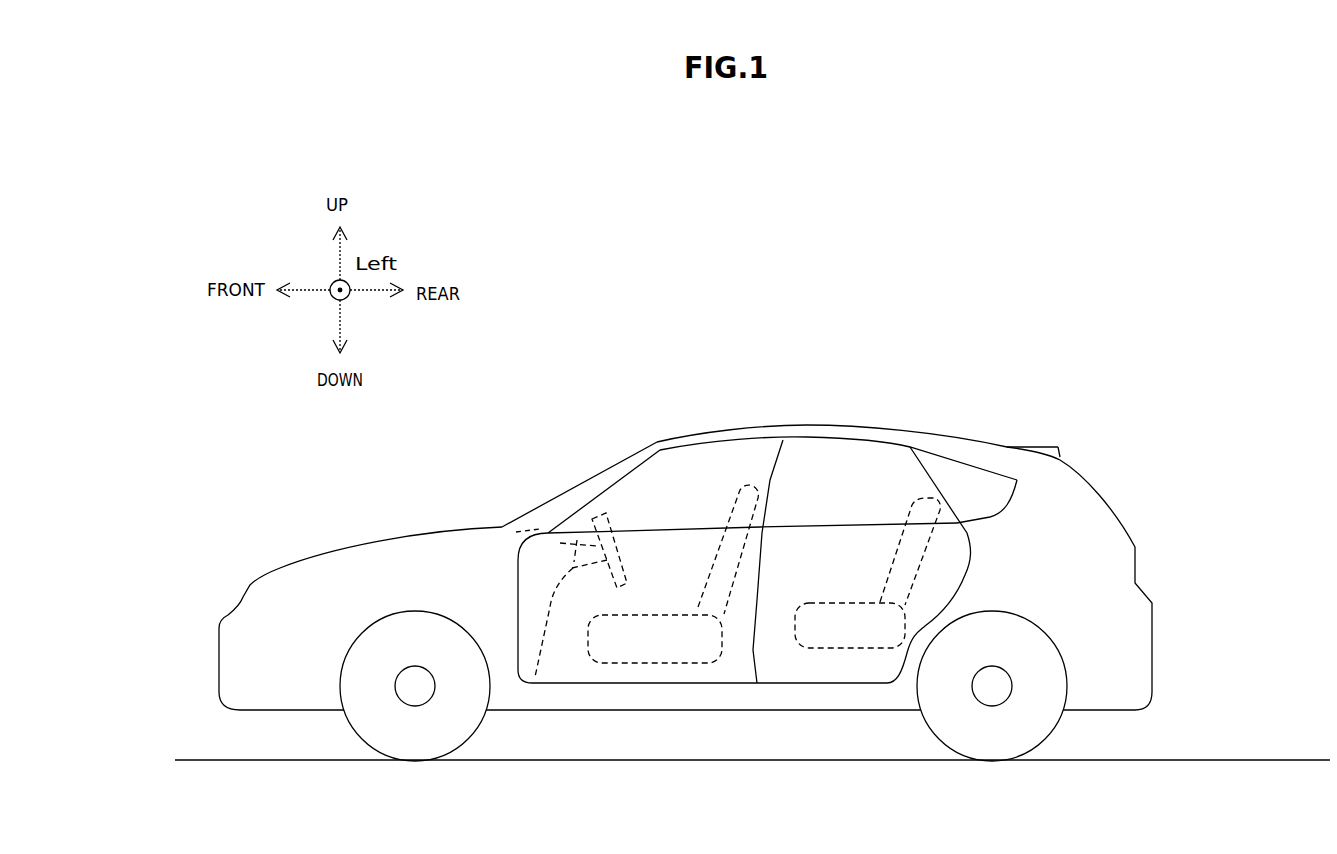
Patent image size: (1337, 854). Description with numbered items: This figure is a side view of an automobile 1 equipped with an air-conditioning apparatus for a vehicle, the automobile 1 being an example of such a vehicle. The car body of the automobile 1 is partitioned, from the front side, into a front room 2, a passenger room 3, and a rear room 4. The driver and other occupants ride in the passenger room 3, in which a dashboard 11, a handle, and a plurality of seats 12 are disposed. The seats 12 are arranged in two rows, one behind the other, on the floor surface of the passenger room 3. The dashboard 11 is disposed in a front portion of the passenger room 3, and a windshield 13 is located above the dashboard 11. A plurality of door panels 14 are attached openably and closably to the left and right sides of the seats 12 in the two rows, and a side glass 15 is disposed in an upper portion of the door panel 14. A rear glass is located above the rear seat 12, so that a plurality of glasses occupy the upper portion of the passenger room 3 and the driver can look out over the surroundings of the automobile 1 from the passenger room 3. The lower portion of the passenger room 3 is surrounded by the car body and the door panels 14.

The automobile 1 is at (692, 388).
The front room 2 is at (393, 558).
The passenger room 3 is at (732, 462).
The rear room 4 is at (1063, 513).
The dashboard 11 is at (572, 547).
The seats 12 is at (638, 620).
The windshield 13 is at (547, 495).
The door panels 14 is at (735, 668).
The side glass 15 is at (763, 457).